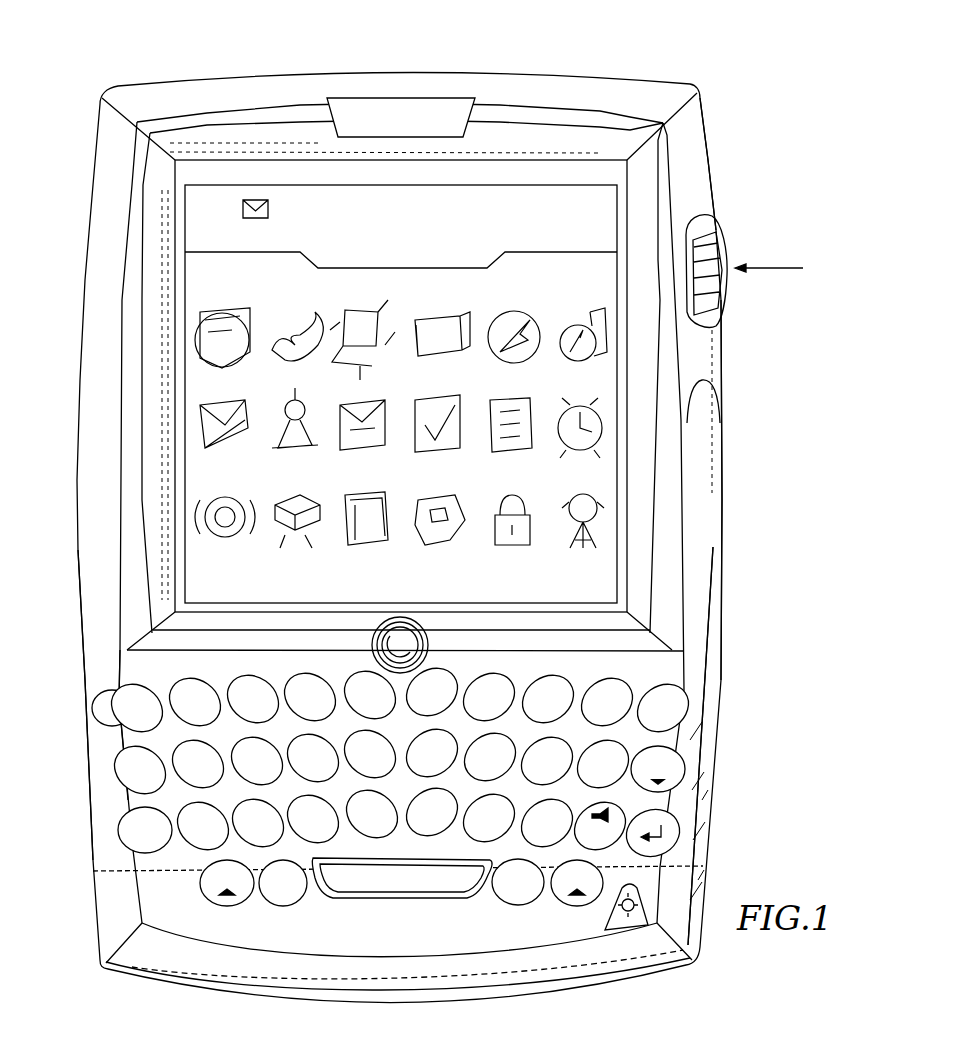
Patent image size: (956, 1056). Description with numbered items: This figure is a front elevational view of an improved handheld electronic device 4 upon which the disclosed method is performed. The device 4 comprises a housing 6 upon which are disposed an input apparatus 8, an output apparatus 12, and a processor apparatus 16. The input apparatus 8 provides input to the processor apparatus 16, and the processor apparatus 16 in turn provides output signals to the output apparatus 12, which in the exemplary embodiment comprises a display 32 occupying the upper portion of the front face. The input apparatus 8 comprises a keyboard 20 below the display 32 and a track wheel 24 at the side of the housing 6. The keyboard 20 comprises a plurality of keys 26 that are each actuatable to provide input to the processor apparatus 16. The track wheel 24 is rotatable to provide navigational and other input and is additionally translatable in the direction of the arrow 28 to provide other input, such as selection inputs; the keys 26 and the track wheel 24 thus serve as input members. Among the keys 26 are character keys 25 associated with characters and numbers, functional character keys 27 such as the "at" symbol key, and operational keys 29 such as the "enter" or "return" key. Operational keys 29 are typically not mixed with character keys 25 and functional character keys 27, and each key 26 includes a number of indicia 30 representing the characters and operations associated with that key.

The handheld electronic device 4 is at (516, 72).
The housing 6 is at (712, 150).
The input apparatus 8 is at (744, 318).
The output apparatus 12 is at (596, 222).
The processor apparatus 16 is at (270, 922).
The keyboard 20 is at (687, 733).
The track wheel 24 is at (707, 233).
The character keys 25 is at (83, 768).
The keys 26 is at (112, 692).
The functional character keys 27 is at (624, 742).
The arrow 28 is at (765, 268).
The operational keys 29 is at (687, 823).
The indicia 30 is at (90, 812).
The display 32 is at (545, 207).